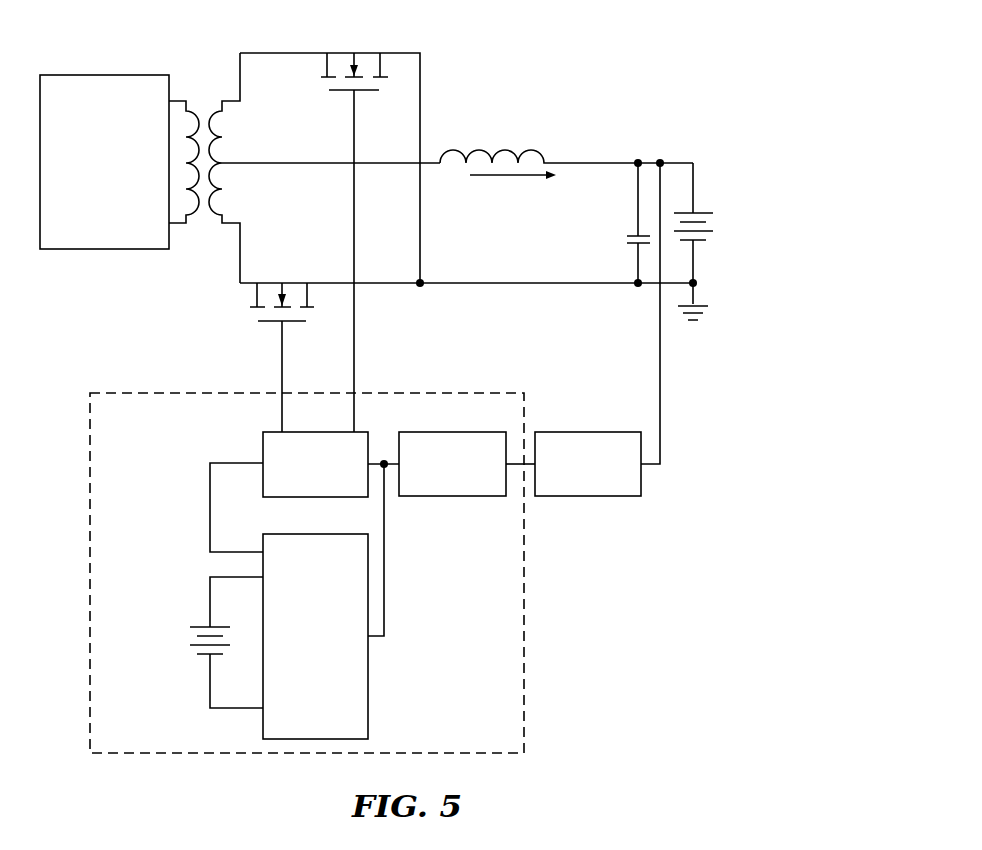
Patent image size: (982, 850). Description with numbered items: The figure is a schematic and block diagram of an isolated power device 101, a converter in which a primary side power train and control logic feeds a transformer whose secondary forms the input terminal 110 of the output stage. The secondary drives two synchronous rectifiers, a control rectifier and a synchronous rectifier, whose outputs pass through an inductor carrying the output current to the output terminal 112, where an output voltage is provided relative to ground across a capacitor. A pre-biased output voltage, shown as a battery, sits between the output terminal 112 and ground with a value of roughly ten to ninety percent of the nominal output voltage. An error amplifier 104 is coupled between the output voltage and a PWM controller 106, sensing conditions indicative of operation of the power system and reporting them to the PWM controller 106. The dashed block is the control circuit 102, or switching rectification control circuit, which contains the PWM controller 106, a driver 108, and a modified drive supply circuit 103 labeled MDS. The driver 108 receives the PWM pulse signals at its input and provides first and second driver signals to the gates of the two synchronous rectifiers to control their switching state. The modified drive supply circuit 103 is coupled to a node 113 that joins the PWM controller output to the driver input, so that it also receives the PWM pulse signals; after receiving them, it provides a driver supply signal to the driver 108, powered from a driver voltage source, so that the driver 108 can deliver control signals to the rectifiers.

The isolated power device 101 is at (103, 325).
The input terminal 110 is at (209, 162).
The output terminal 112 is at (661, 160).
The control circuit 102 is at (525, 570).
The driver 108 is at (263, 450).
The PWM controller 106 is at (455, 497).
The error amplifier 104 is at (590, 496).
The node 113 is at (386, 467).
The modified drive supply circuit 103 is at (357, 677).